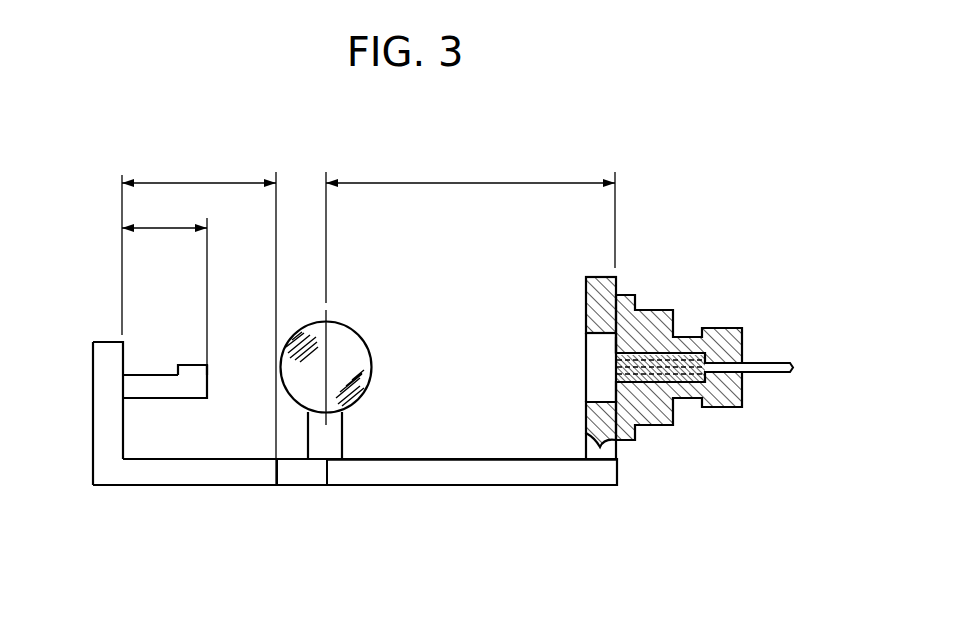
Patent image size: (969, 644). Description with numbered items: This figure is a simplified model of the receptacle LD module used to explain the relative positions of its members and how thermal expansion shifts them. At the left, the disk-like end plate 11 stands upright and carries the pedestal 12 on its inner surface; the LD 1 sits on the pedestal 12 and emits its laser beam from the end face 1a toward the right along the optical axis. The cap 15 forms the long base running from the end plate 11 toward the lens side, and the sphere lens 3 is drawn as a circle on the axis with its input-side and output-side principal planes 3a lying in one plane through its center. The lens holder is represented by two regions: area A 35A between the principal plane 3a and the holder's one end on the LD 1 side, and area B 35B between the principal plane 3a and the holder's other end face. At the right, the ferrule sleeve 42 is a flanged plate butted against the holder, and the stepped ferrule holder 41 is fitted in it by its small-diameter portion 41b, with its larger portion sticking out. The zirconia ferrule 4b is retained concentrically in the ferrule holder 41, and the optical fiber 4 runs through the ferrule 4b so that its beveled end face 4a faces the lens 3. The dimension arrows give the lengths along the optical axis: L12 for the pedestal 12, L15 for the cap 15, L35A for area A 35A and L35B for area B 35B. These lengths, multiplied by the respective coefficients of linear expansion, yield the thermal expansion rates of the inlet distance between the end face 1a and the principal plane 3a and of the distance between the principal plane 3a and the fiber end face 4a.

The LD 1 is at (193, 362).
The end face 1a is at (210, 370).
The sphere lens 3 is at (357, 330).
The principal planes 3a is at (325, 380).
The optical fiber 4 is at (763, 360).
The end face 4a is at (615, 365).
The ferrule 4b is at (681, 384).
The end plate 11 is at (93, 360).
The pedestal 12 is at (145, 373).
The cap 15 is at (165, 487).
The area A of the lens holder 35A is at (297, 487).
The area B of the lens holder 35B is at (405, 487).
The ferrule holder 41 is at (685, 337).
The small-diameter portion 41b is at (615, 347).
The ferrule sleeve 42 is at (647, 310).
The length of the cap L15 is at (199, 168).
The length of the pedestal L12 is at (164, 213).
The length of area A L35A is at (298, 182).
The length of area B L35B is at (470, 170).